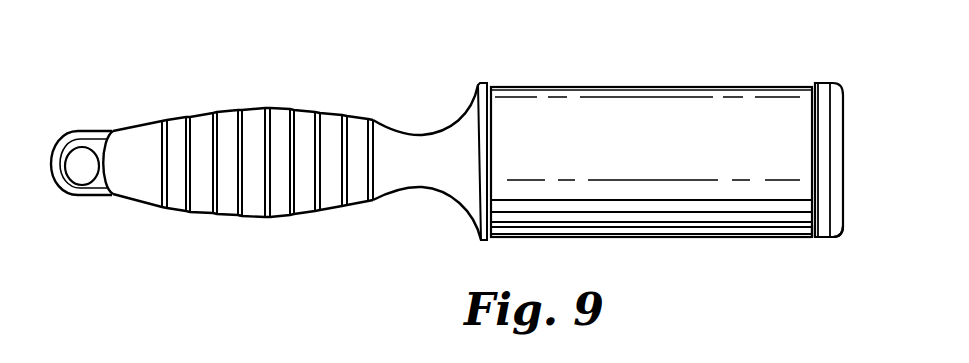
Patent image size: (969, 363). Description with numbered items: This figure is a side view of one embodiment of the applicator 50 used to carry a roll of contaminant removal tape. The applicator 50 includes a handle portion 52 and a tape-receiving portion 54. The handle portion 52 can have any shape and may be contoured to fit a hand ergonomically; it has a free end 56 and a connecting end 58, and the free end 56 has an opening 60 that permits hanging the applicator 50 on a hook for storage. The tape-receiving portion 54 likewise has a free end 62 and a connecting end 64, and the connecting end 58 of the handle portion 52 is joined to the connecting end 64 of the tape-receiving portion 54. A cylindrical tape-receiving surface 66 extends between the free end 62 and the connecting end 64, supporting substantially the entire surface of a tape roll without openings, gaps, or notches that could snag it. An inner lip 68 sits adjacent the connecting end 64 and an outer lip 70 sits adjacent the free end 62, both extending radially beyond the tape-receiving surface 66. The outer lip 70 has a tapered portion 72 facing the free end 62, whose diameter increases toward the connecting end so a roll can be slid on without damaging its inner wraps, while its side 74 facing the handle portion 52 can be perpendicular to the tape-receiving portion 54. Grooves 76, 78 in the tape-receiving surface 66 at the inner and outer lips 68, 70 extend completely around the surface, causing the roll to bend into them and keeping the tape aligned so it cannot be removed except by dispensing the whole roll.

The applicator 50 is at (420, 88).
The handle portion 52 is at (283, 123).
The tape-receiving portion 54 is at (657, 88).
The free end 56 is at (123, 147).
The connecting end 58 is at (447, 137).
The opening 60 is at (80, 157).
The free end 62 is at (843, 108).
The connecting end 64 is at (498, 86).
The tape-receiving surface 66 is at (683, 238).
The inner lip 68 is at (482, 242).
The outer lip 70 is at (838, 234).
The tapered portion 72 is at (822, 239).
The side 74 is at (816, 239).
The groove 76 is at (486, 82).
The groove 78 is at (811, 239).